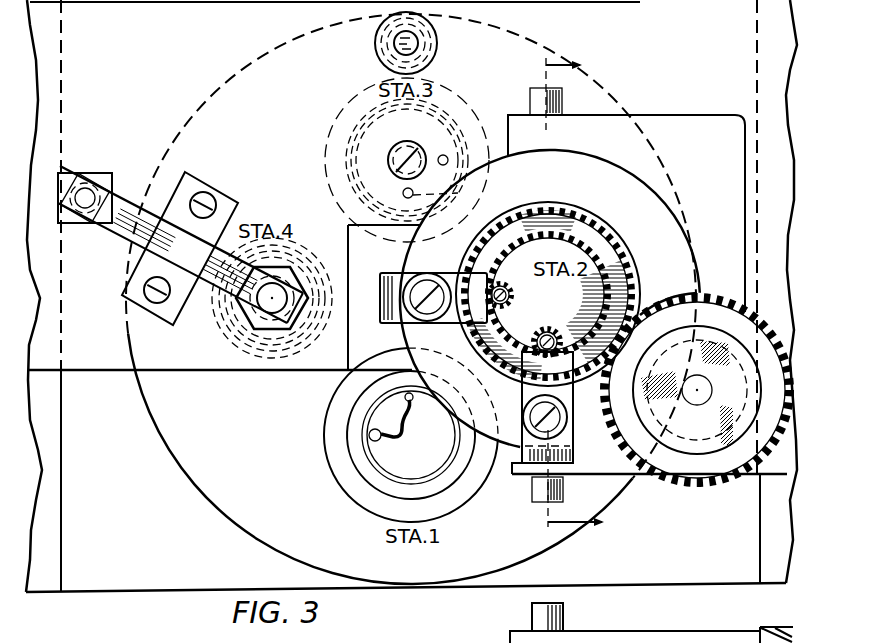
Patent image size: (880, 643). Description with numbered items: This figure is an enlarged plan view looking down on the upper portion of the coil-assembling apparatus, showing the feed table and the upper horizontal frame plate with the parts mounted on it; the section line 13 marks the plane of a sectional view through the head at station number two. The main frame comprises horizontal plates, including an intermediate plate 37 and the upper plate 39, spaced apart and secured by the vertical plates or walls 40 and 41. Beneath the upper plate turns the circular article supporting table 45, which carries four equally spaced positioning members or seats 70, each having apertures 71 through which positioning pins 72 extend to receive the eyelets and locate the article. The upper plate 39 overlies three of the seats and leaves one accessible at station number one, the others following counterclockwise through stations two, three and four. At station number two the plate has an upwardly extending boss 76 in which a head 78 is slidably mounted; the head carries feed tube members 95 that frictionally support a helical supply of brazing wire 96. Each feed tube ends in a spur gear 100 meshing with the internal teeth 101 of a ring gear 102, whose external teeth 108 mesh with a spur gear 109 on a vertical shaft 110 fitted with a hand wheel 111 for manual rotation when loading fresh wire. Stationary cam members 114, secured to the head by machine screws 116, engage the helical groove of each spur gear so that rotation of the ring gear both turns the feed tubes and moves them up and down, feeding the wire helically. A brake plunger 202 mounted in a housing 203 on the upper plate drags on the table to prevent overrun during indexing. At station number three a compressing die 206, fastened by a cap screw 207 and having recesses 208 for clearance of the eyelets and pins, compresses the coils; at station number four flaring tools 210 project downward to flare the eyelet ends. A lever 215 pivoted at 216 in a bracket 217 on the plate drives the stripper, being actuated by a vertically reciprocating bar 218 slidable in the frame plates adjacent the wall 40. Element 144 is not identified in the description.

The section line 13- 13 is at (575, 292).
The intermediate plate 37 is at (145, 584).
The upper plate 39 is at (104, 371).
The vertical plate 40 is at (57, 532).
The vertical plate 41 is at (762, 538).
The article supporting table 45 is at (197, 470).
The positioning member 70 is at (256, 385).
The aperture 71 is at (396, 410).
The positioning pin 72 is at (411, 435).
The boss 76 is at (650, 118).
The head 78 is at (623, 168).
The feed tube member 95 is at (546, 328).
The brazing wire 96 is at (516, 294).
The spur gear 100 is at (503, 289).
The internal teeth 101 is at (620, 283).
The ring gear 102 is at (596, 221).
The external teeth 108 is at (623, 243).
The spur gear 109 is at (712, 297).
The vertical shaft 110 is at (695, 395).
The hand wheel 111 is at (672, 472).
The stationary cam member 114 is at (470, 330).
The machine screw 116 is at (426, 288).
The screw 144 is at (530, 100).
The plunger 202 is at (412, 50).
The housing 203 is at (436, 33).
The compressing die 206 is at (330, 143).
The cap screw 207 is at (409, 151).
The recess 208 is at (448, 163).
The flaring tool 210 is at (283, 256).
The lever 215 is at (118, 232).
The pivot 216 is at (148, 278).
The bracket 217 is at (146, 303).
The bar 218 is at (104, 173).